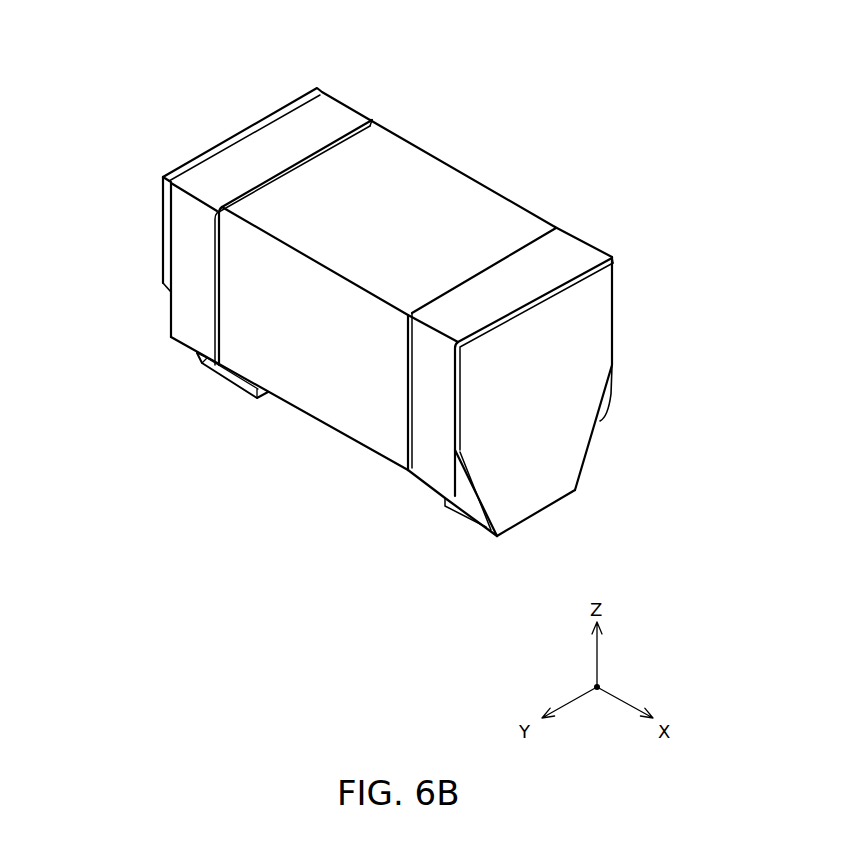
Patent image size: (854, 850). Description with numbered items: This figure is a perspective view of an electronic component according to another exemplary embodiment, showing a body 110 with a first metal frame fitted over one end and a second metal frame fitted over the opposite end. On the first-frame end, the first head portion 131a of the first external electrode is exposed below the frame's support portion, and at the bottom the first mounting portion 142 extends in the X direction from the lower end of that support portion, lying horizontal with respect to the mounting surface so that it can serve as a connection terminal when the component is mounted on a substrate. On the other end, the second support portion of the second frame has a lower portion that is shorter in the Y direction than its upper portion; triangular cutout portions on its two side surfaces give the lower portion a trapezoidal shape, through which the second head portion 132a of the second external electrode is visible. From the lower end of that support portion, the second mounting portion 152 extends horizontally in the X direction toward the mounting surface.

The body 110 is at (384, 279).
The first head portion 131a is at (167, 320).
The second head portion 132a is at (603, 403).
The first mounting portion 142 is at (215, 372).
The second mounting portion 152 is at (490, 527).